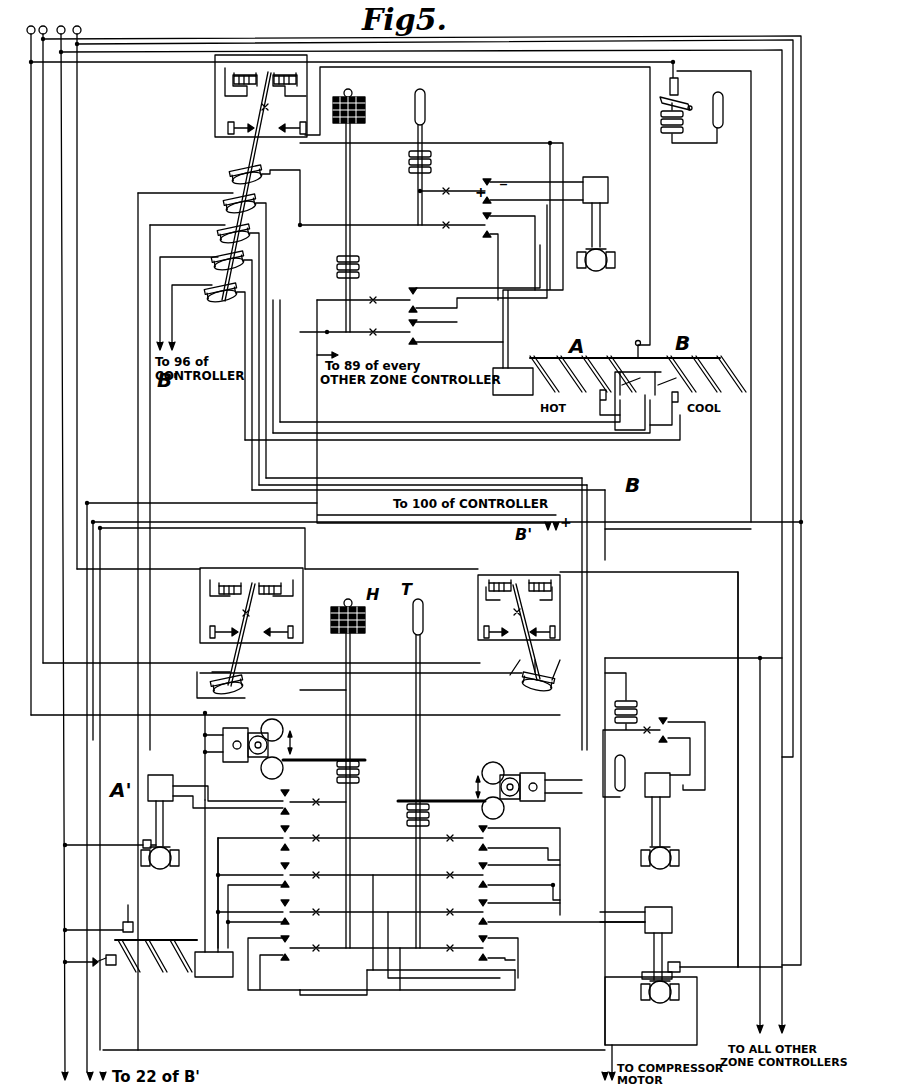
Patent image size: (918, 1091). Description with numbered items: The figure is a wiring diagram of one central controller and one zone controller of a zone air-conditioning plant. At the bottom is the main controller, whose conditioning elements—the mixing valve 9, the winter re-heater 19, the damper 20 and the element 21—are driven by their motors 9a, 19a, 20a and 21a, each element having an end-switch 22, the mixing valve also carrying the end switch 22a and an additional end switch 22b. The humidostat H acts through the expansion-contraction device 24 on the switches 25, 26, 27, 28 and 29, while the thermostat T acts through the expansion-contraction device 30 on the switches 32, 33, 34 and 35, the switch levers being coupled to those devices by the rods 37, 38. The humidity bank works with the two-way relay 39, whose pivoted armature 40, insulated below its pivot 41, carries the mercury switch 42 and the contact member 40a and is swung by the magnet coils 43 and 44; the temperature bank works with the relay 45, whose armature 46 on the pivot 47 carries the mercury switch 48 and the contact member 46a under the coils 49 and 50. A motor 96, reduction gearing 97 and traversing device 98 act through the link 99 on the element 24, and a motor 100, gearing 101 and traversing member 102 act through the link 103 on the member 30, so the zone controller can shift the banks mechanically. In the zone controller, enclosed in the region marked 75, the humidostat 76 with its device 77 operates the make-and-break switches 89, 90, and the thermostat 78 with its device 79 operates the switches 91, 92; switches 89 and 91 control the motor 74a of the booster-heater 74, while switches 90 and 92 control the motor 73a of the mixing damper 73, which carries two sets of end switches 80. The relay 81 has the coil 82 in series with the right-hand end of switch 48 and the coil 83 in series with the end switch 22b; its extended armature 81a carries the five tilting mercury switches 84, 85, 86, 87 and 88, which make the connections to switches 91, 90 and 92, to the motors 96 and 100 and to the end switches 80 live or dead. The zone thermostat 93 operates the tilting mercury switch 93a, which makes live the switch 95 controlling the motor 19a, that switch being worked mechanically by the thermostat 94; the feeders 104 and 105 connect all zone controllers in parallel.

The mixing valve 9 is at (658, 998).
The motor of the mixing valve 9a is at (655, 907).
The winter re-heater 19 is at (665, 865).
The motor of the winter re-heater 19a is at (650, 795).
The damper 20 is at (160, 940).
The motor of the damper 20a is at (222, 977).
The conditioning element 21 is at (162, 865).
The motor of conditioning element 21 21a is at (158, 775).
The end-switch 22 is at (147, 838).
The end switch 22a is at (650, 970).
The additional end switch 22b is at (674, 962).
The expansion-contraction device 24 is at (360, 772).
The switch 25 is at (313, 799).
The switch 26 is at (350, 835).
The switch 27 is at (349, 902).
The switch 28 is at (349, 909).
The switch 29 is at (305, 946).
The expansion-contraction device 30 is at (430, 818).
The switch 32 is at (483, 842).
The switch 33 is at (514, 881).
The switch 34 is at (556, 918).
The switch 35 is at (493, 957).
The rod 37 is at (345, 690).
The rod 38 is at (421, 748).
The two-way relay 39 is at (212, 595).
The pivoted armature 40 is at (250, 597).
The contact member 40a is at (240, 615).
The pivot 41 is at (244, 612).
The mercury switch 42 is at (215, 690).
The magnet coil 43 is at (230, 582).
The magnet coil 44 is at (271, 582).
The two-way relay 45 is at (482, 598).
The pivoted armature 46 is at (515, 598).
The contact member 46a is at (530, 620).
The pivot 47 is at (512, 610).
The mercury switch 48 is at (530, 690).
The magnet coil 49 is at (497, 580).
The magnet coil 50 is at (540, 580).
The mixing damper 73 is at (605, 355).
The motor of the mixing damper 73a is at (495, 395).
The booster-heater 74 is at (606, 258).
The motor of the booster-heater 74a is at (594, 177).
The master controller 75 is at (520, 95).
The humidostat 76 is at (360, 108).
The expansion-contraction device 77 is at (360, 262).
The thermostat 78 is at (425, 108).
The expansion-contraction device 79 is at (431, 155).
The end switches 80 is at (664, 405).
The relay 81 is at (228, 100).
The extended armature 81a is at (245, 137).
The coil 82 is at (243, 72).
The coil 83 is at (285, 65).
The tilting mercury switch 84 is at (232, 178).
The tilting mercury switch 85 is at (225, 207).
The tilting mercury switch 86 is at (219, 238).
The tilting mercury switch 87 is at (213, 266).
The tilting mercury switch 88 is at (215, 303).
The make-and-break switch 89 is at (432, 258).
The make-and-break switch 90 is at (401, 326).
The make-and-break switch 91 is at (500, 184).
The make-and-break switch 92 is at (416, 250).
The thermostat 93 is at (725, 122).
The tilting mercury switch 93a is at (660, 84).
The thermostat 94 is at (626, 780).
The make-and-break switch 95 is at (653, 725).
The motor 96 is at (222, 758).
The reduction gearing 97 is at (256, 757).
The traversing device 98 is at (284, 727).
The link 99 is at (330, 765).
The motor 100 is at (535, 772).
The reduction gearing 101 is at (512, 800).
The traversing member 102 is at (498, 762).
The link 103 is at (437, 798).
The connection 104 is at (740, 1017).
The connection 105 is at (802, 1013).